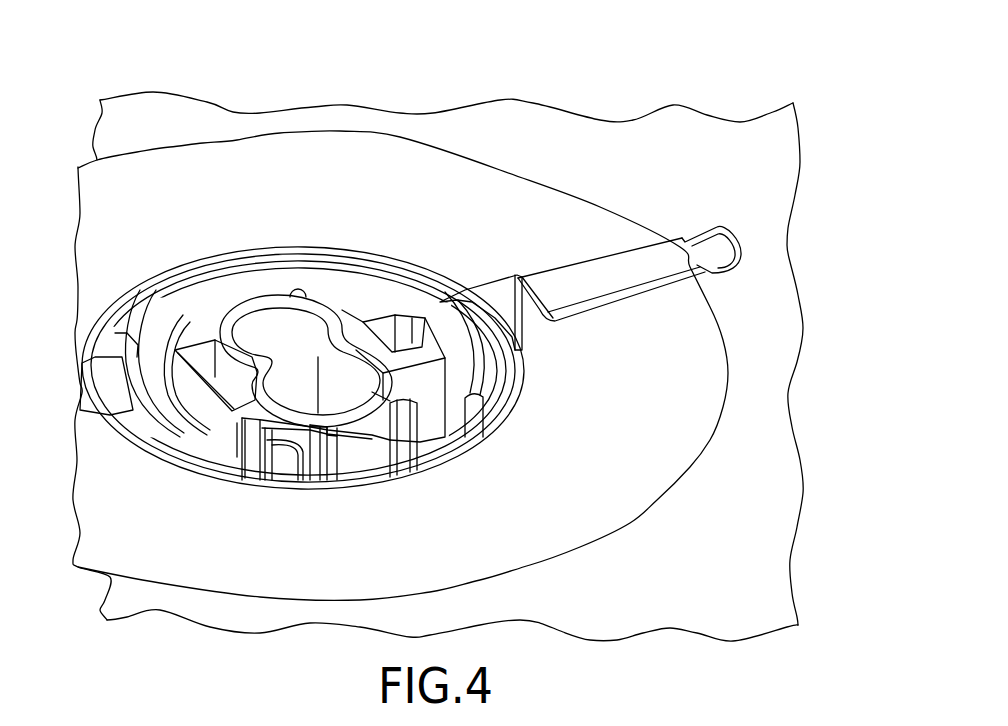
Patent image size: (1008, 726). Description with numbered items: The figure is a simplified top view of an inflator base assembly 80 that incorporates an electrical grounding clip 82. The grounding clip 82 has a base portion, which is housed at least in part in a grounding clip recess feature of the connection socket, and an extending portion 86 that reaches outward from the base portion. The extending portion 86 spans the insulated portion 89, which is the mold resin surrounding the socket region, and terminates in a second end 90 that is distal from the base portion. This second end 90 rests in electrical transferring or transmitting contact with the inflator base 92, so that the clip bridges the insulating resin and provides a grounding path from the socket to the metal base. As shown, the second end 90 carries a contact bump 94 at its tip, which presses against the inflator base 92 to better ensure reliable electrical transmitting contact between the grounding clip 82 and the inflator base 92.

The inflator base assembly 80 is at (416, 92).
The electrical grounding clip 82 is at (565, 262).
The extending portion 86 is at (610, 280).
The insulated portion 89 is at (600, 250).
The second end 90 is at (700, 226).
The inflator base 92 is at (769, 275).
The contact bump 94 is at (718, 270).